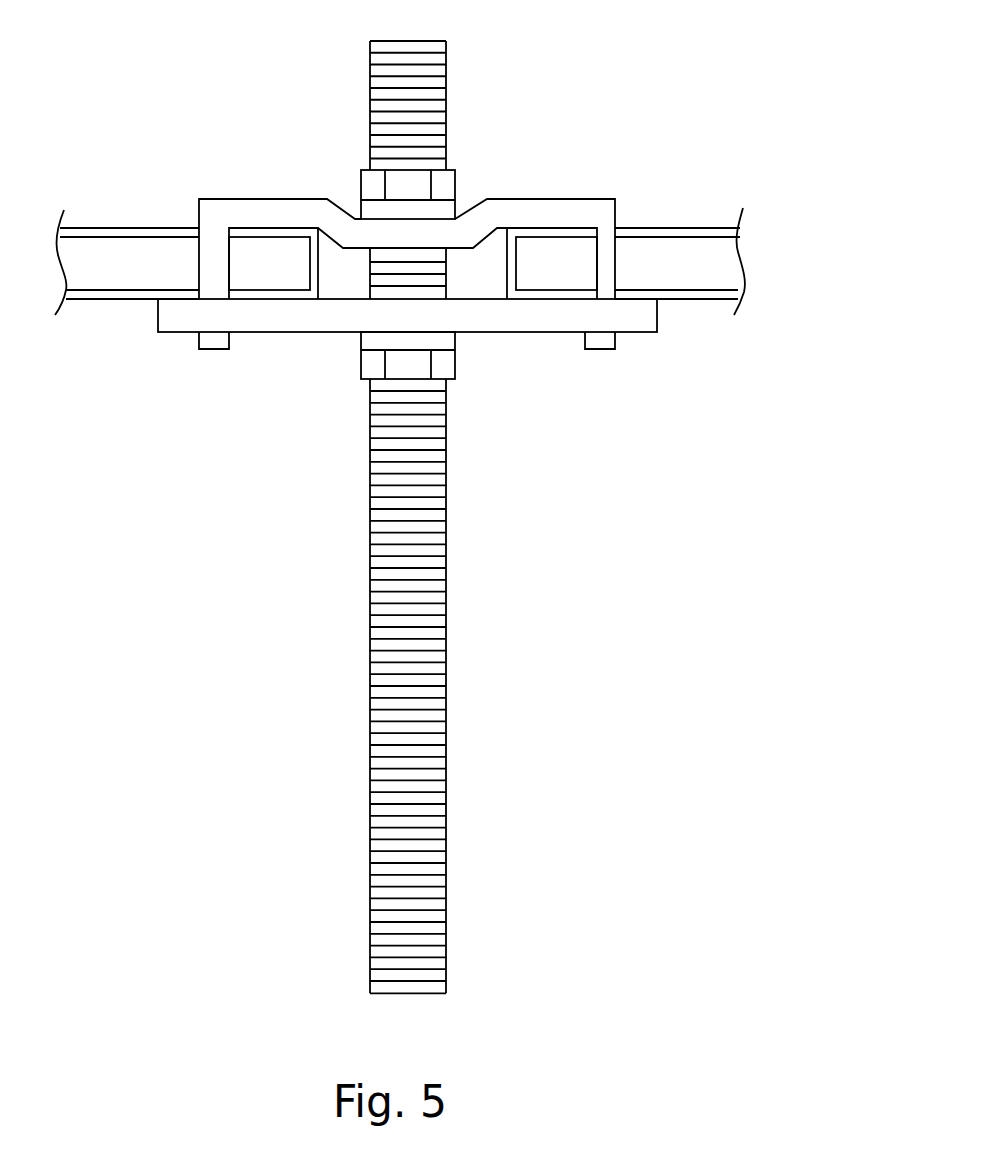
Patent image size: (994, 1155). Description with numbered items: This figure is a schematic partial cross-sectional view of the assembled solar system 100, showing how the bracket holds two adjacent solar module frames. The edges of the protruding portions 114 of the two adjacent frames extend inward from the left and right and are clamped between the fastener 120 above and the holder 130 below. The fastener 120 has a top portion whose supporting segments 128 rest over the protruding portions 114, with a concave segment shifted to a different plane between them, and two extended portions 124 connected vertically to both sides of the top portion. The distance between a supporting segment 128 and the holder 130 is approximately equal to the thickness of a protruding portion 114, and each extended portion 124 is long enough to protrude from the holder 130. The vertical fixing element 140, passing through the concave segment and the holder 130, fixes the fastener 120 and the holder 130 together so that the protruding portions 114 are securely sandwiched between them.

The solar system 100 is at (131, 36).
The protruding portion 114 is at (687, 232).
The fastener 120 is at (521, 180).
The extended portion 124 is at (607, 268).
The supporting segment 128 is at (582, 212).
The holder 130 is at (532, 332).
The fixing element 140 is at (447, 643).